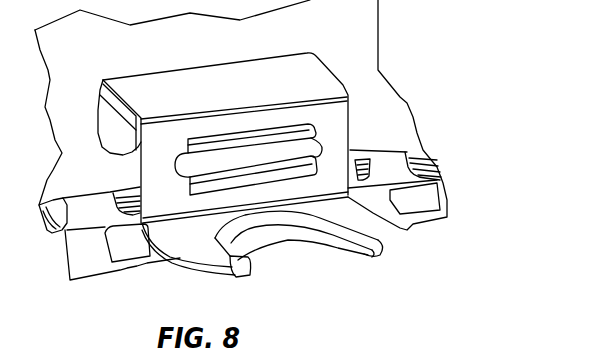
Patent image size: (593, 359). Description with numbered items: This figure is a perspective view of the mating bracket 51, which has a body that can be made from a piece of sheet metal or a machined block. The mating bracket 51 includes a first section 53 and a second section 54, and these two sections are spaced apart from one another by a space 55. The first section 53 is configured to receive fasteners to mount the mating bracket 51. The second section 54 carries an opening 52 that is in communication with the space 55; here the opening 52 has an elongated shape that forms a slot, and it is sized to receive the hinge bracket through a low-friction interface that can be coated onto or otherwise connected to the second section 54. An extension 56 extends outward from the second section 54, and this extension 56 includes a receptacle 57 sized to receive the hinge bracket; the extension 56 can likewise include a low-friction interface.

The mating bracket 51 is at (248, 78).
The opening 52 is at (322, 148).
The first section 53 is at (113, 108).
The second section 54 is at (167, 183).
The space 55 is at (98, 136).
The extension 56 is at (377, 230).
The receptacle 57 is at (308, 270).